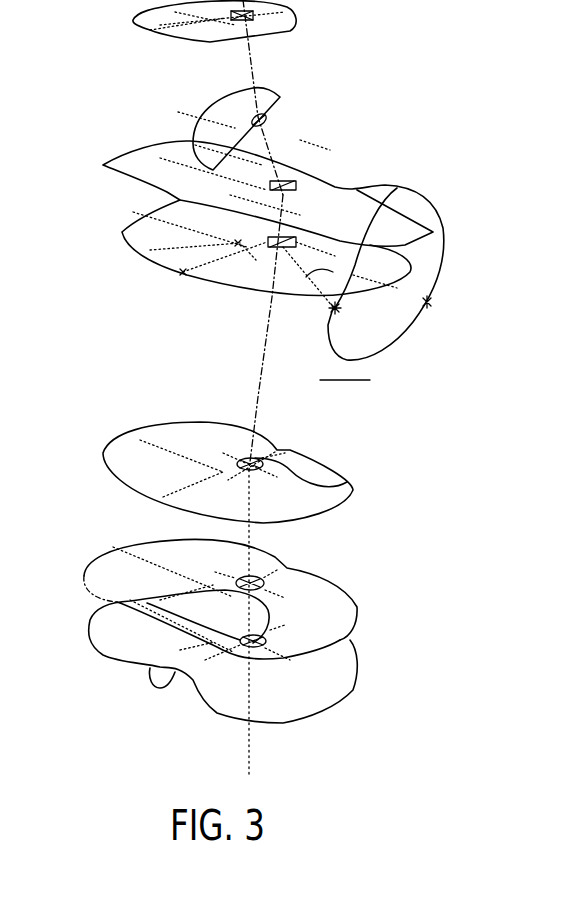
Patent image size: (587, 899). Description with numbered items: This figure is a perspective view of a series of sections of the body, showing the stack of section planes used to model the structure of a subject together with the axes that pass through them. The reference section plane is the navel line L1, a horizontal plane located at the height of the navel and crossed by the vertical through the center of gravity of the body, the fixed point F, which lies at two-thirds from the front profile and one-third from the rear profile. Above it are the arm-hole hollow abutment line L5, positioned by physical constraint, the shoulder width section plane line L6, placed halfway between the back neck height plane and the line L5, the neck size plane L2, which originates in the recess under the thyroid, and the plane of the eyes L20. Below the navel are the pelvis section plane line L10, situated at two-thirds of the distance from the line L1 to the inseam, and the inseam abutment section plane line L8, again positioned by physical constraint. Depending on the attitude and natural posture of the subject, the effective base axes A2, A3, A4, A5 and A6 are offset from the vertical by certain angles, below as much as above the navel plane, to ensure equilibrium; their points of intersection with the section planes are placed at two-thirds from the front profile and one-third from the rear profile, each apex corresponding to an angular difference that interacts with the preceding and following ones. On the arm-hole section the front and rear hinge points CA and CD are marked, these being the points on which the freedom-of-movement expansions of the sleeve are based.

The section plane line of the eyes L20 is at (150, 32).
The neck size section plane line L2 is at (200, 132).
The shoulder width section plane line L6 is at (103, 165).
The arm-hole hollow abutment line L5 is at (122, 232).
The navel reference section plane line L1 is at (110, 442).
The pelvis section plane line L10 is at (100, 557).
The inseam abutment section plane line L8 is at (23, 572).
The base axis A6 is at (250, 58).
The base axis A5 is at (274, 125).
The base axis A4 is at (283, 200).
The base axis A3 is at (257, 368).
The base axis A2 is at (250, 747).
The arm-hole front hinge point CA is at (333, 308).
The arm-hole rear hinge point CD is at (424, 313).
The fixed point F is at (347, 481).